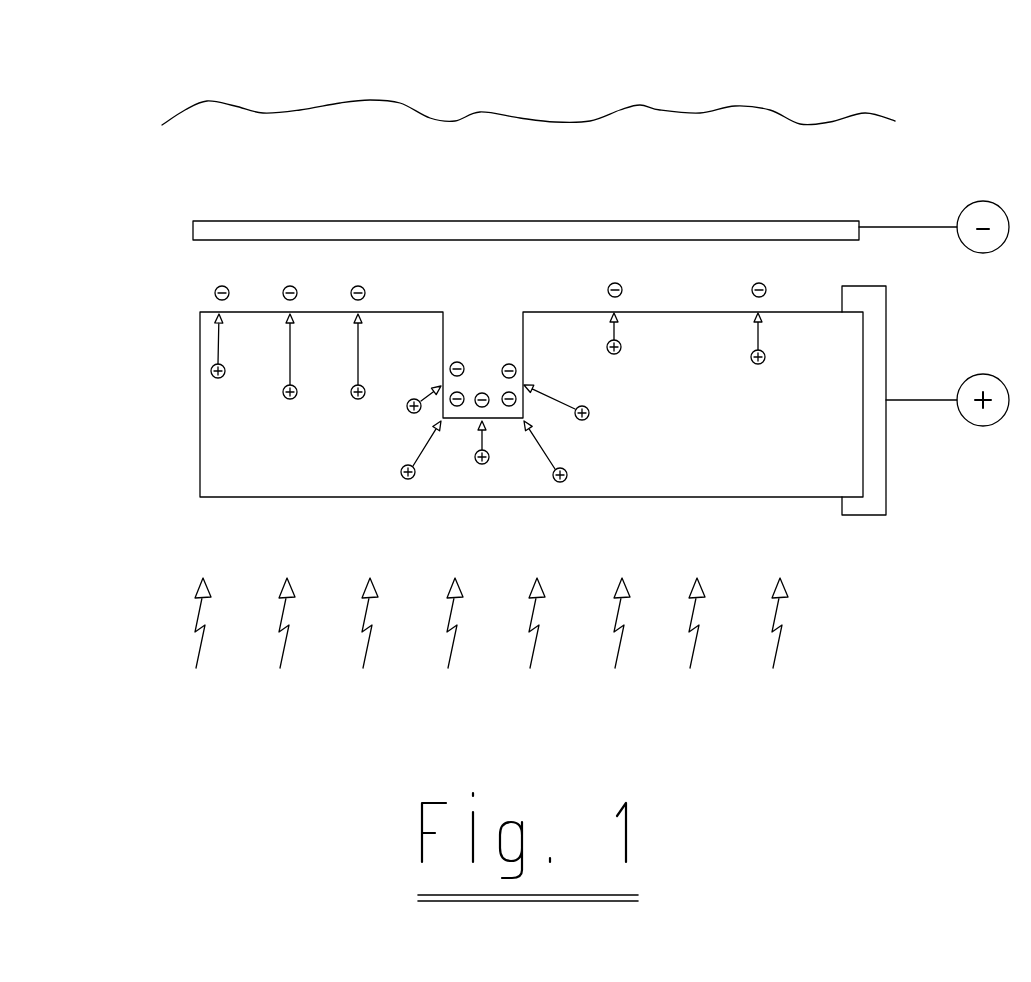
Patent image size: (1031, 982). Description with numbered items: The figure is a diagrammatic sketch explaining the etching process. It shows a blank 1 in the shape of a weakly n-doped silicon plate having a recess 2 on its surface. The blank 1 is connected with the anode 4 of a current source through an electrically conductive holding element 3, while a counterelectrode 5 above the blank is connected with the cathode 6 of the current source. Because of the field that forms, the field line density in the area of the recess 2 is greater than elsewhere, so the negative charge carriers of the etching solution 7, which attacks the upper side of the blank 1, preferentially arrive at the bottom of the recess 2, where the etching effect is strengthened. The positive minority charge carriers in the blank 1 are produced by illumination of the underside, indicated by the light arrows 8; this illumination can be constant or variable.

The blank 1 is at (246, 440).
The recess 2 is at (492, 342).
The electrically conductive holding element 3 is at (866, 503).
The anode 4 is at (988, 428).
The counterelectrode 5 is at (685, 228).
The cathode 6 is at (982, 215).
The etching solution 7 is at (347, 177).
The light arrows 8 is at (365, 660).